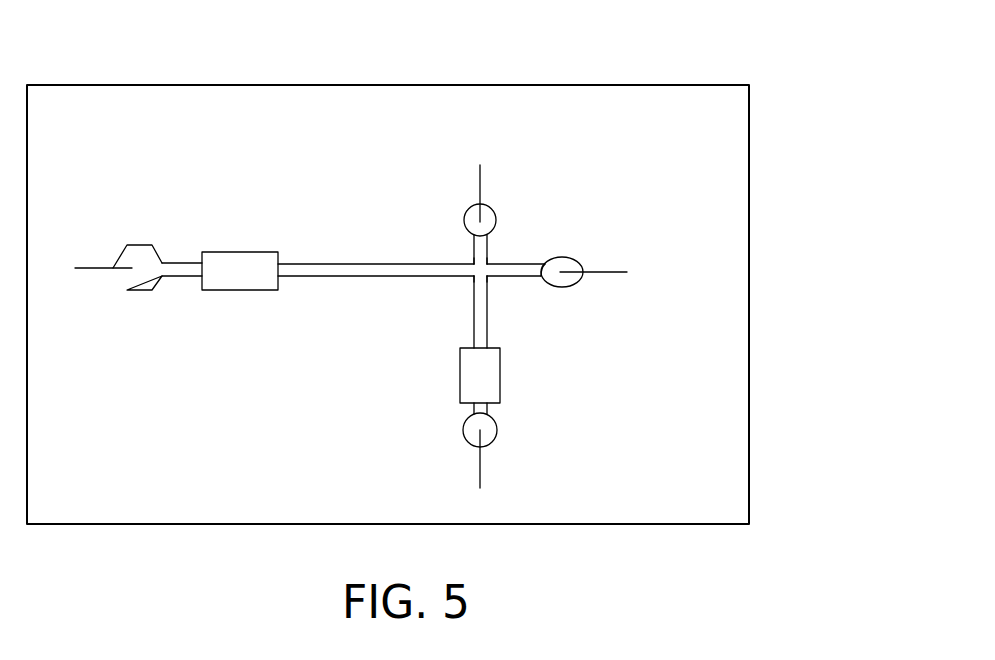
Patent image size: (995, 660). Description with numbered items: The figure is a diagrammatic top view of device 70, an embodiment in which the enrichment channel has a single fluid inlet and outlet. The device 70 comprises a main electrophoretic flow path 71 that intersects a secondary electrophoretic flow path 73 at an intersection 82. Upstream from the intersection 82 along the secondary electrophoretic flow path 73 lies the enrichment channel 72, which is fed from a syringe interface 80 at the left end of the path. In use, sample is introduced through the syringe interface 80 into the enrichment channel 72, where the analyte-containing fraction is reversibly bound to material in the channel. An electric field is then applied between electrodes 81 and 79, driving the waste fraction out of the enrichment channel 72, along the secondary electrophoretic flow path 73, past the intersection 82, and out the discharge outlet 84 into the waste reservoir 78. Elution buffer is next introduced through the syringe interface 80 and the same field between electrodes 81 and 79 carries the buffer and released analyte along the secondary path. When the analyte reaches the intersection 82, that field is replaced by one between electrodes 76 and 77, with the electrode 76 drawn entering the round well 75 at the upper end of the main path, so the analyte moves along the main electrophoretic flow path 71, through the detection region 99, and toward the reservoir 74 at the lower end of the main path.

The device 70 is at (661, 65).
The main electrophoretic flow path 71 is at (482, 310).
The enrichment channel 72 is at (255, 284).
The secondary electrophoretic flow path 73 is at (422, 273).
The reservoir 74 is at (488, 427).
The upper reservoir 75 is at (488, 220).
The electrode 76 is at (482, 182).
The electrode 77 is at (482, 468).
The waste reservoir 78 is at (553, 287).
The electrode 79 is at (607, 273).
The syringe interface 80 is at (142, 282).
The electrode 81 is at (88, 268).
The intersection 82 is at (482, 262).
The discharge outlet 84 is at (537, 261).
The detection region 99 is at (497, 391).